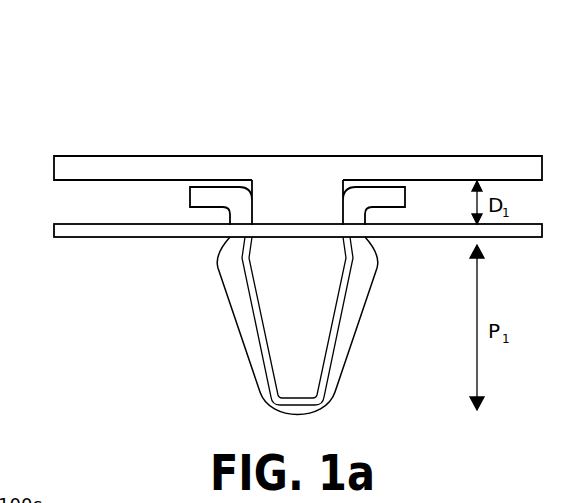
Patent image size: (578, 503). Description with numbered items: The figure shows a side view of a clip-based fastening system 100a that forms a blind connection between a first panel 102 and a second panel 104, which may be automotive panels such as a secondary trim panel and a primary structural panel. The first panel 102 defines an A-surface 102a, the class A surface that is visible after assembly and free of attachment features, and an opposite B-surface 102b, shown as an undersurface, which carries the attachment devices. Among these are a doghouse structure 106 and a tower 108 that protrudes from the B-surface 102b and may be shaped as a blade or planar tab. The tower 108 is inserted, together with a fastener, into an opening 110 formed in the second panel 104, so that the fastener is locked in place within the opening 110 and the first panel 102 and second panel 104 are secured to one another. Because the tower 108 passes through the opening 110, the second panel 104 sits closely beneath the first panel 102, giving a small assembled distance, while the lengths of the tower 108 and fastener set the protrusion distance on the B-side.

The clip-based fastening system 100a is at (54, 141).
The first panel 102 is at (54, 163).
The A-surface 102a is at (113, 143).
The B-surface 102b is at (107, 180).
The second panel 104 is at (112, 238).
The doghouse structure 106 is at (230, 297).
The tower 108 is at (302, 202).
The opening 110 is at (330, 238).